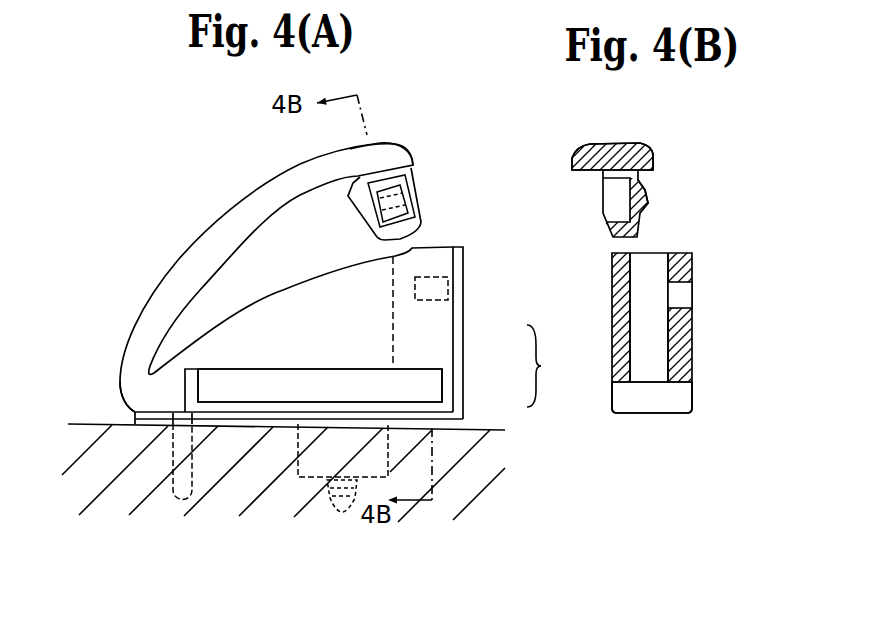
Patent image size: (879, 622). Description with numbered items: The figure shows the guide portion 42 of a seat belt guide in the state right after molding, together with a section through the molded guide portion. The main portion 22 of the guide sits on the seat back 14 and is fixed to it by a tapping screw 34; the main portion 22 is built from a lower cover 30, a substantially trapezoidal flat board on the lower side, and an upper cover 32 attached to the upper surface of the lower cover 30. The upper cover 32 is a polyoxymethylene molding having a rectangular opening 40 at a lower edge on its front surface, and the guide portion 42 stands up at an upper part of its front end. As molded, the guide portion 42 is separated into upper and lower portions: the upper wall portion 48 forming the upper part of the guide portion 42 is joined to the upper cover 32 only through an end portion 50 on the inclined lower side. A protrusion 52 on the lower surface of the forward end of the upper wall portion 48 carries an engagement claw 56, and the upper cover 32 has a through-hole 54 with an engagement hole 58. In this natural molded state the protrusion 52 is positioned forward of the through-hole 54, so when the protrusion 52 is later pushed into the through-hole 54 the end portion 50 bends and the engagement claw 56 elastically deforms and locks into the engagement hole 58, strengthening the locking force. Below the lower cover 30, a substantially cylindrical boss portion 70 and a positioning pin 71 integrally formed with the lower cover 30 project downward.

In FIG. 4A, the seat back 14 is at (92, 424).
In FIG. 4A, the main portion 22 is at (550, 366).
In FIG. 4A, the lower cover 30 is at (455, 408).
In FIG. 4A, the upper cover 32 is at (466, 368).
In FIG. 4B, the upper cover 32 is at (607, 415).
In FIG. 4A, the tapping screw 34 is at (343, 512).
In FIG. 4A, the rectangular opening 40 is at (295, 369).
In FIG. 4B, the rectangular opening 40 is at (663, 403).
In FIG. 4A, the guide portion 42 is at (160, 271).
In FIG. 4B, the guide portion 42 is at (665, 145).
In FIG. 4A, the upper wall portion 48 is at (219, 228).
In FIG. 4B, the upper wall portion 48 is at (620, 150).
In FIG. 4A, the end portion 50 is at (120, 392).
In FIG. 4A, the protrusion 52 is at (356, 183).
In FIG. 4B, the protrusion 52 is at (601, 198).
In FIG. 4A, the through-hole 54 is at (386, 327).
In FIG. 4B, the through-hole 54 is at (632, 283).
In FIG. 4A, the engagement claw 56 is at (412, 197).
In FIG. 4B, the engagement claw 56 is at (649, 195).
In FIG. 4A, the engagement hole 58 is at (428, 303).
In FIG. 4B, the engagement hole 58 is at (680, 288).
In FIG. 4A, the boss portion 70 is at (290, 475).
In FIG. 4A, the positioning pin 71 is at (172, 453).